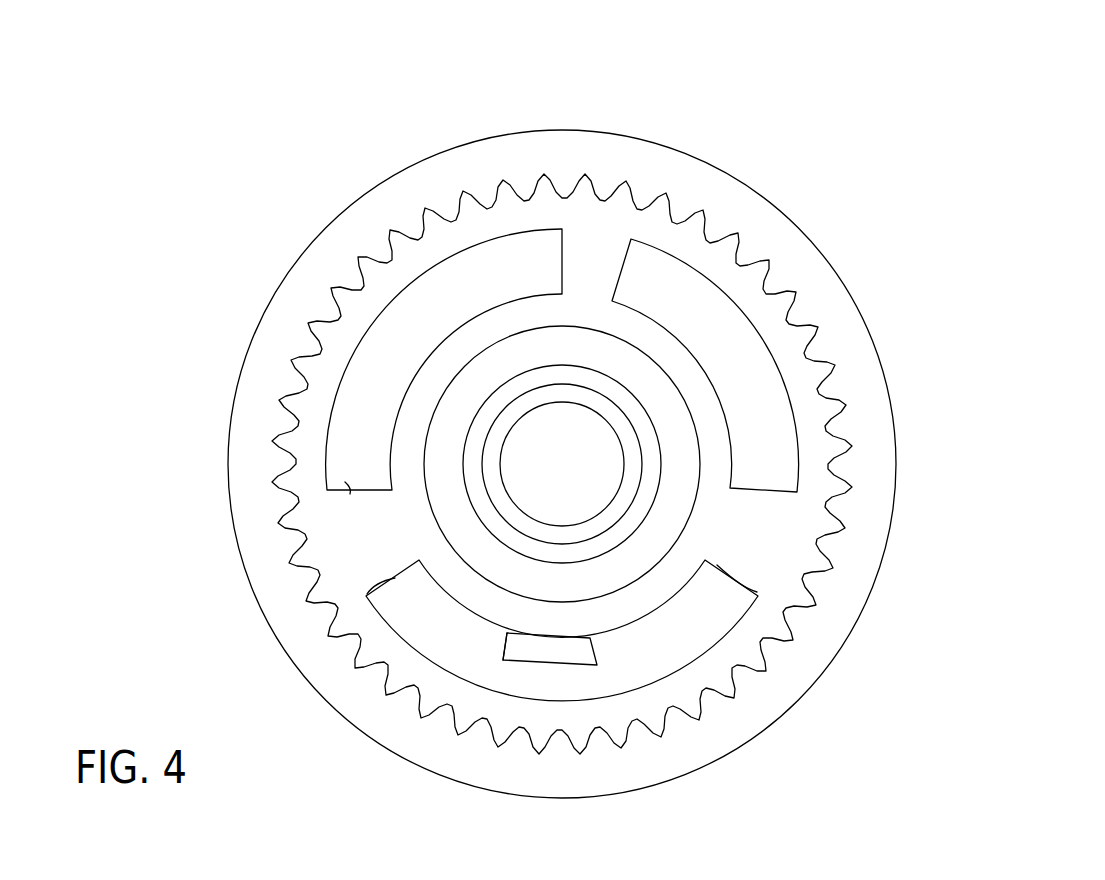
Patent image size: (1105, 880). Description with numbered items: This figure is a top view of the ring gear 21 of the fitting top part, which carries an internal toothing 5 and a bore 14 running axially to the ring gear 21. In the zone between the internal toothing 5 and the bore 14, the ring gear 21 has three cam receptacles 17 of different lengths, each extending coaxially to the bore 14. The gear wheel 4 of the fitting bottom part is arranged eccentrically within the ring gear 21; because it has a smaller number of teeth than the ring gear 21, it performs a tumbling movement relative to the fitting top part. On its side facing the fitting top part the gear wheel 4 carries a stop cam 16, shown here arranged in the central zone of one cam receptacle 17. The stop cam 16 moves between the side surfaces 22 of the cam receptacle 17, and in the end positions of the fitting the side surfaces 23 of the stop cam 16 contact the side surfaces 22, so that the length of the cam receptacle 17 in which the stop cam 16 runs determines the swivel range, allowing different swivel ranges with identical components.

The gear wheel 4 is at (720, 340).
The internal toothing 5 is at (837, 465).
The bore 14 is at (560, 517).
The stop cam 16 is at (578, 655).
The cam receptacle 17 is at (612, 464).
The ring gear 21 is at (690, 190).
The side surfaces of the cam receptacle 22 is at (358, 490).
The side surfaces of the stop cam 23 is at (503, 634).